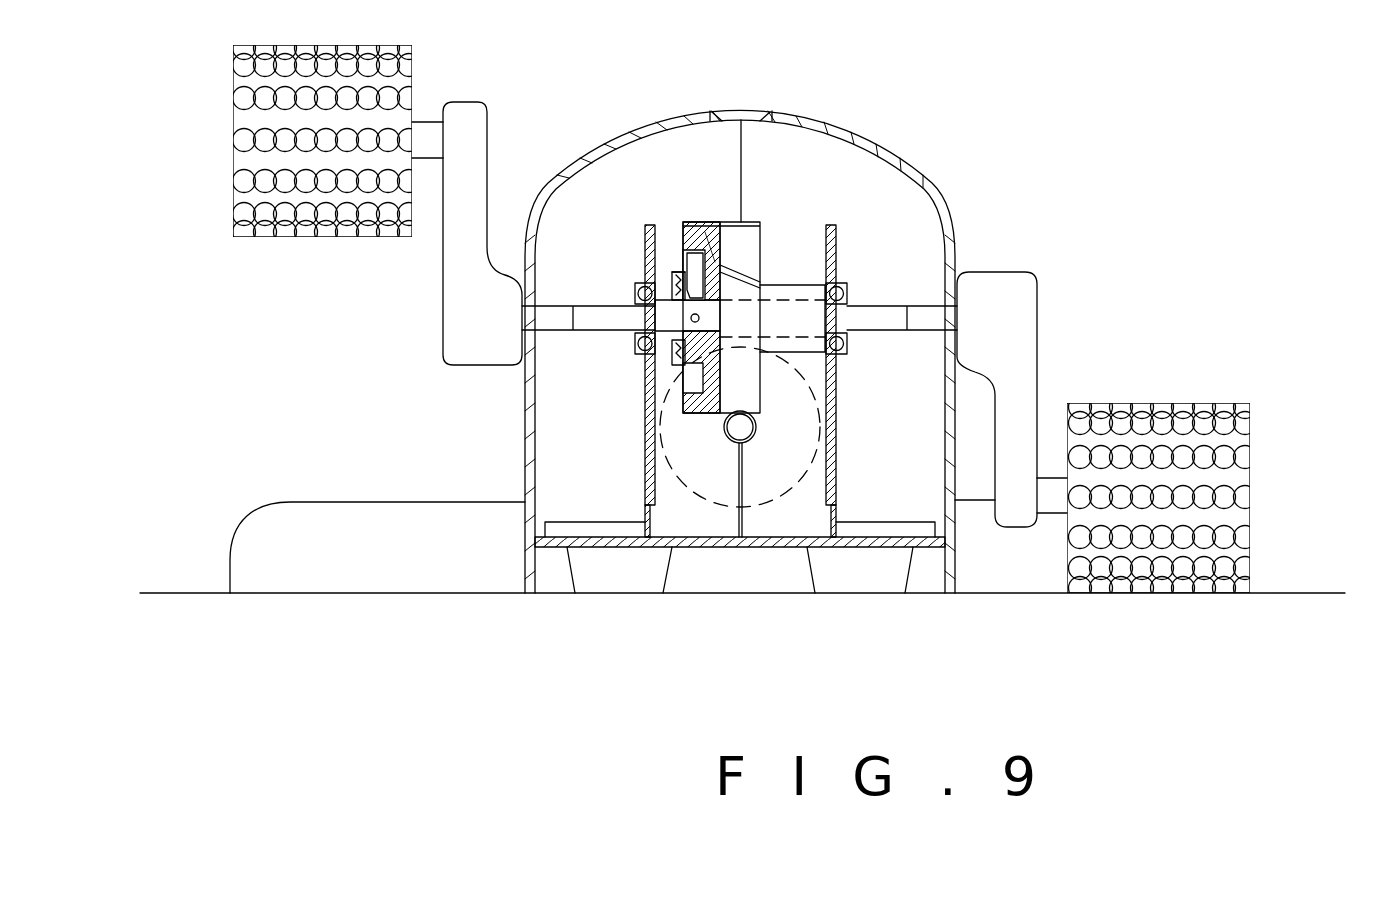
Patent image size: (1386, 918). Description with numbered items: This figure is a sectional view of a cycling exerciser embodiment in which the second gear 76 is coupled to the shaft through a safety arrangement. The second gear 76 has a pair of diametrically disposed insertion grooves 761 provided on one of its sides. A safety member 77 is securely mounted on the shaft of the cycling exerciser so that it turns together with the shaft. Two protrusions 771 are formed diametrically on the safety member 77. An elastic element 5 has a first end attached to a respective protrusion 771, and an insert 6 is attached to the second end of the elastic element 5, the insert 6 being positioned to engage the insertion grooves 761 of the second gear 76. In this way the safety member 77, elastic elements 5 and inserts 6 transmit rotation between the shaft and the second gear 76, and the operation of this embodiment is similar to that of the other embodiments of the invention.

The elastic element 5 is at (672, 274).
The insert 6 is at (690, 272).
The second gear 76 is at (700, 222).
The insertion groove 761 is at (718, 226).
The safety member 77 is at (636, 285).
The protrusion 771 is at (680, 272).